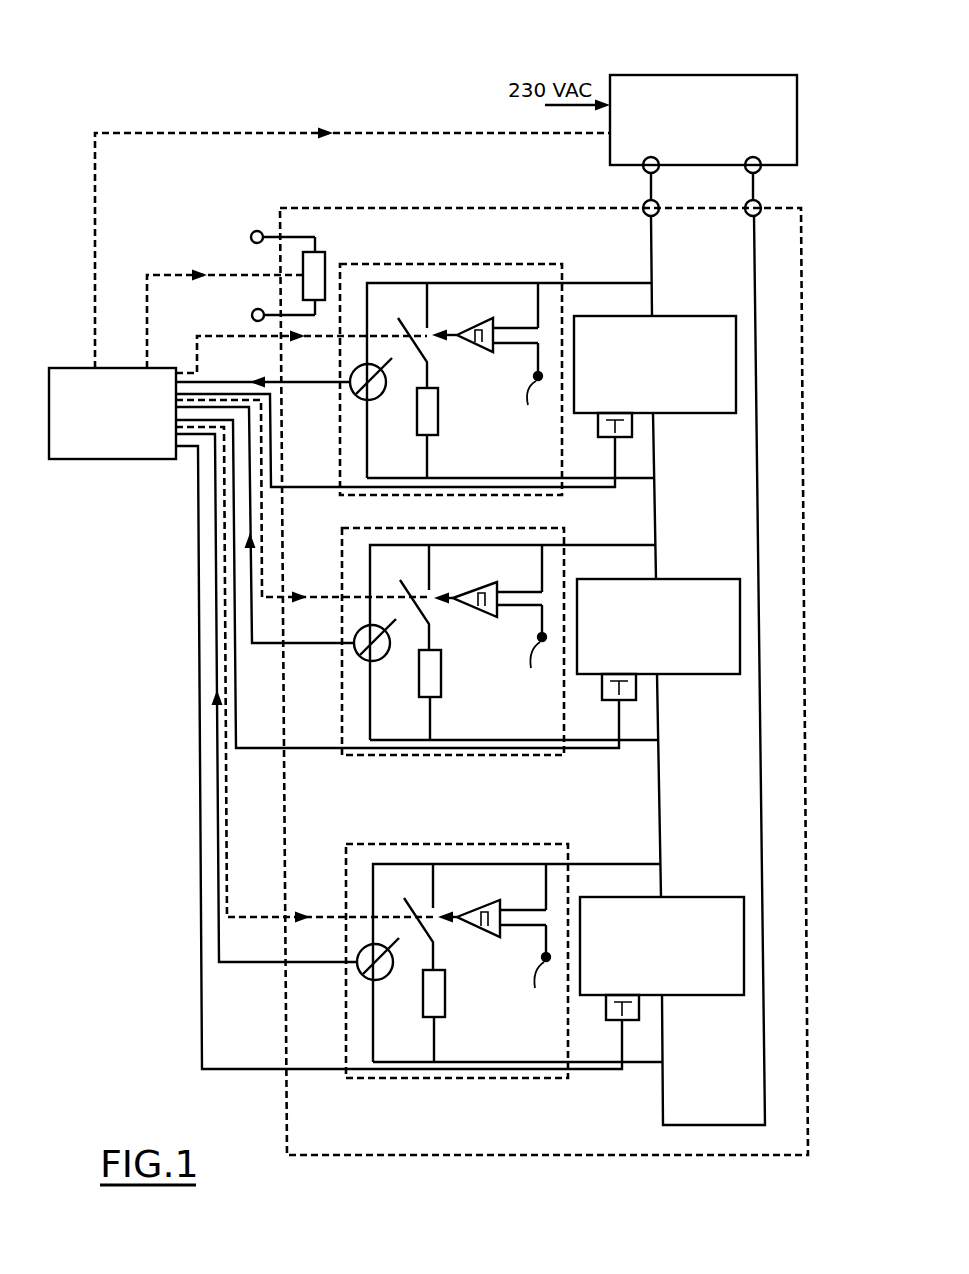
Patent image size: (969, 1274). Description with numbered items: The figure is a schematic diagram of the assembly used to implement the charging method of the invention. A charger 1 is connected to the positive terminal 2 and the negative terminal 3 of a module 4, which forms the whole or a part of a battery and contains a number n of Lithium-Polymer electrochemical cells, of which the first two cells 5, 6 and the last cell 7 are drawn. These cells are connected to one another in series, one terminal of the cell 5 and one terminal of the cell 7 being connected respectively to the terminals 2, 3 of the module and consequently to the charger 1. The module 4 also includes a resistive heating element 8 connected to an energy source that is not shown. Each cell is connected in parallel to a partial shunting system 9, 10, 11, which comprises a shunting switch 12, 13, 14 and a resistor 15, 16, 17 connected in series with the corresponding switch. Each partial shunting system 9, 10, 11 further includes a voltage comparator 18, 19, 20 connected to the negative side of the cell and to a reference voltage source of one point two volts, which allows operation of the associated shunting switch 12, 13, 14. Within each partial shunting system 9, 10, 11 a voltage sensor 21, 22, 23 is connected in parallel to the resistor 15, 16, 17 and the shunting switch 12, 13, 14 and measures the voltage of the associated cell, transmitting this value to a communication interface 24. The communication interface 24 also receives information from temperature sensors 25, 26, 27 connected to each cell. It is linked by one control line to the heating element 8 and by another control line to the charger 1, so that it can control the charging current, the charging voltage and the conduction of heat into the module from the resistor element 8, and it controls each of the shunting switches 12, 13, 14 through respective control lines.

The charger 1 is at (670, 75).
The positive terminal 2 is at (762, 204).
The negative terminal 3 is at (642, 204).
The module 4 is at (818, 520).
The cell 5 is at (676, 316).
The cell 6 is at (678, 579).
The cell 7 is at (684, 897).
The resistive heating element 8 is at (322, 254).
The partial shunting system 9 is at (562, 466).
The partial shunting system 10 is at (564, 727).
The partial shunting system 11 is at (568, 1048).
The shunting switch 12 is at (416, 326).
The shunting switch 13 is at (419, 588).
The shunting switch 14 is at (423, 909).
The resistor 15 is at (439, 420).
The resistor 16 is at (442, 685).
The resistor 17 is at (446, 1005).
The voltage comparator 18 is at (487, 353).
The voltage comparator 19 is at (491, 618).
The voltage comparator 20 is at (478, 937).
The voltage sensor 21 is at (359, 367).
The voltage sensor 22 is at (362, 629).
The voltage sensor 23 is at (364, 949).
The communication interface 24 is at (96, 459).
The temperature sensor 25 is at (632, 428).
The temperature sensor 26 is at (636, 690).
The temperature sensor 27 is at (639, 1012).